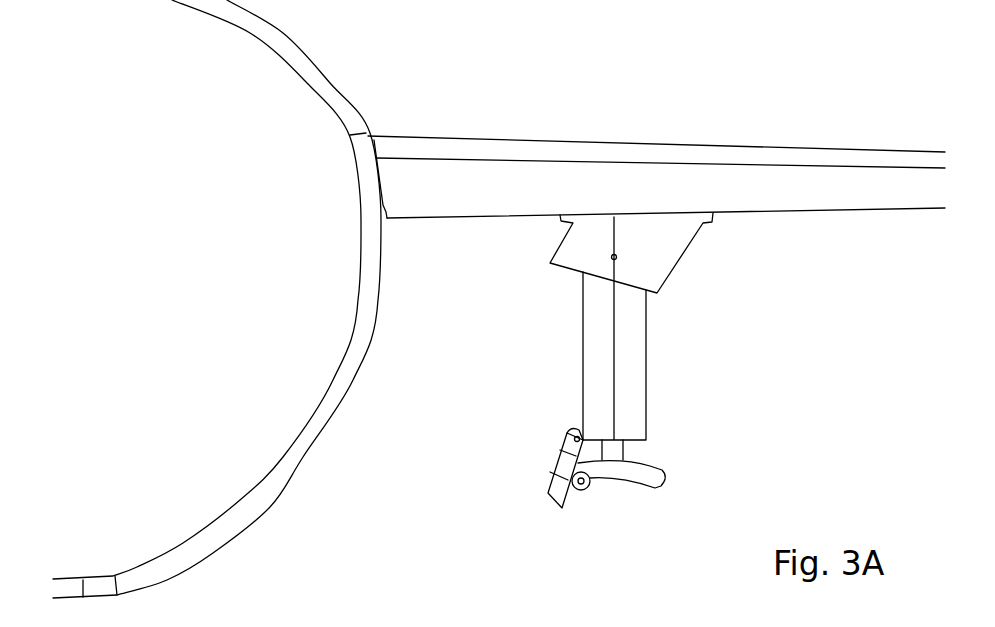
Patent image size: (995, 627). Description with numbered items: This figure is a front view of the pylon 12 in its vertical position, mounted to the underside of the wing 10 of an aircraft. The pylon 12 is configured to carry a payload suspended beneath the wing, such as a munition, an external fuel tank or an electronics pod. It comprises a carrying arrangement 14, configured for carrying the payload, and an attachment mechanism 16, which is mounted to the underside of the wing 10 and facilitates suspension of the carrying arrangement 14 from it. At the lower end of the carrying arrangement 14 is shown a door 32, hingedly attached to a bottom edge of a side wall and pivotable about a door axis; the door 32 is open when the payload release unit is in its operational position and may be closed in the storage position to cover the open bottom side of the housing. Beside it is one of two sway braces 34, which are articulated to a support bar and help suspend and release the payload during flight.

The wing 10 is at (655, 195).
The pylon 12 is at (763, 310).
The carrying arrangement 14 is at (647, 352).
The attachment mechanism 16 is at (683, 253).
The door 32 is at (557, 462).
The sway brace 34 is at (647, 475).